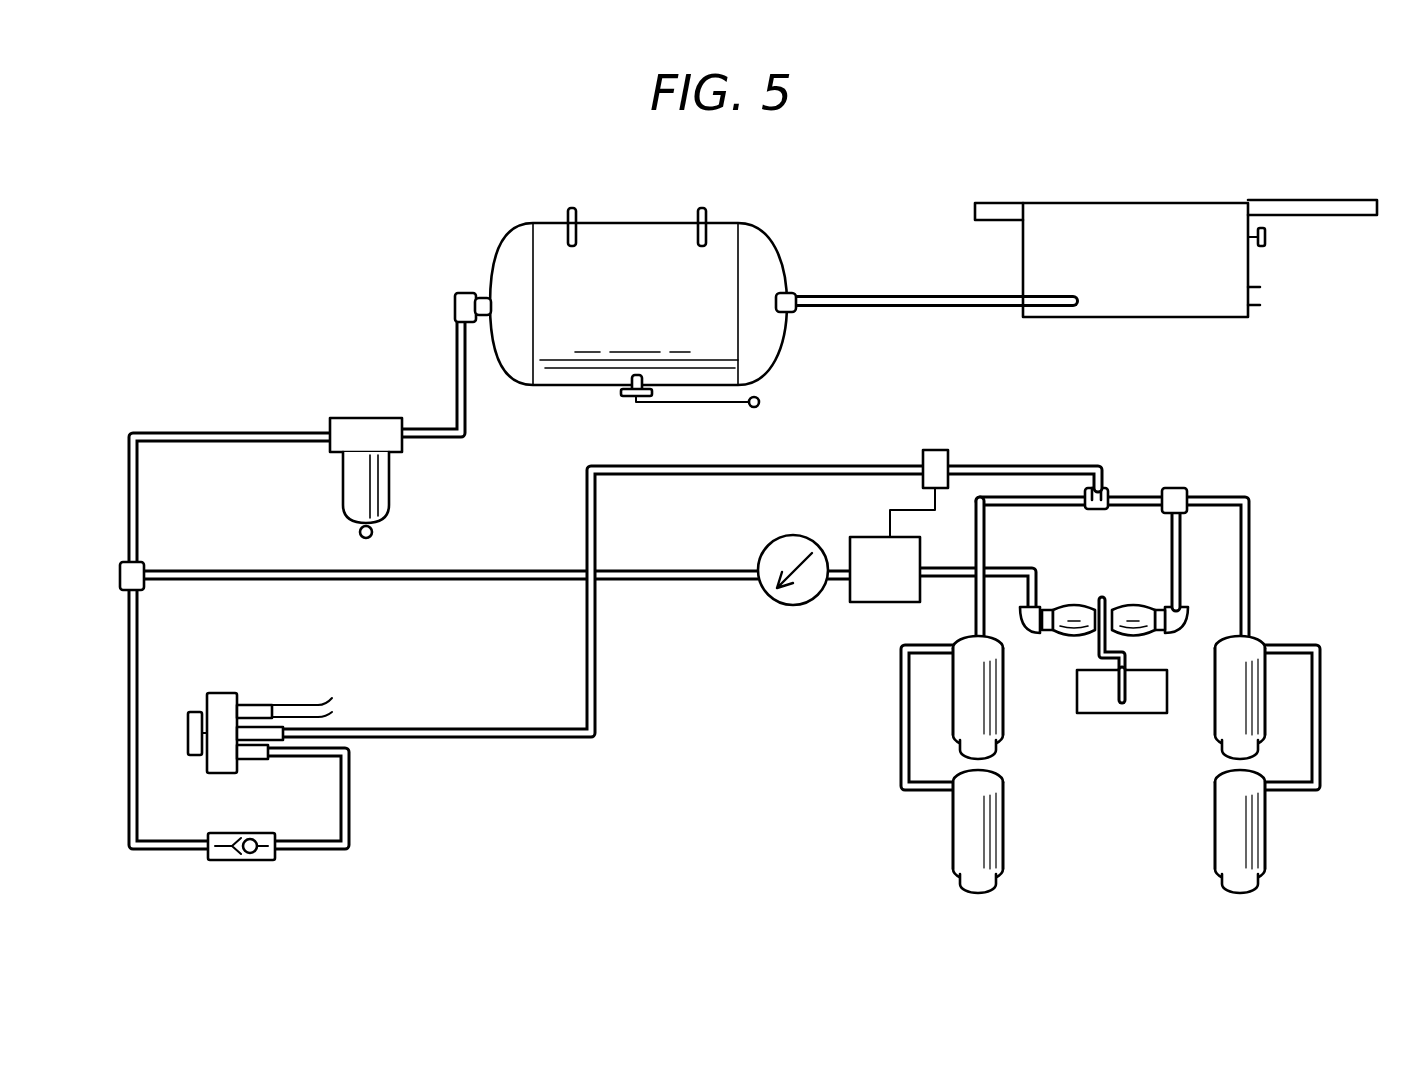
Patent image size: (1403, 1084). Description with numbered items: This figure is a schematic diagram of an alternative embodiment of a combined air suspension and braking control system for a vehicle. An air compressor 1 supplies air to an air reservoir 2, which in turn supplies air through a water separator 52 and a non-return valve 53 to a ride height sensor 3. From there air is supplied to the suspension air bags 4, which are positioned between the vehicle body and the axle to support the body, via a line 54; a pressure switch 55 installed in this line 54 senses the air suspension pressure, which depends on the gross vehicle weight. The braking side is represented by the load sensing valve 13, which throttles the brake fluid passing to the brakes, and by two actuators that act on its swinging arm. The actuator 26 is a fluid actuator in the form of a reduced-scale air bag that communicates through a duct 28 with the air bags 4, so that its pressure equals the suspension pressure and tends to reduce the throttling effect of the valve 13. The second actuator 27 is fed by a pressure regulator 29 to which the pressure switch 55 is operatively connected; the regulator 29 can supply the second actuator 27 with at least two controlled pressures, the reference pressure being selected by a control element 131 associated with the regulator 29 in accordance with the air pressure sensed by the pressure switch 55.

The air compressor 1 is at (1117, 248).
The air reservoir 2 is at (618, 272).
The ride height sensor 3 is at (218, 715).
The air bags 4 is at (1008, 860).
The load sensing valve 13 is at (1112, 715).
The actuator 26 is at (1125, 613).
The second actuator 27 is at (1063, 613).
The duct 28 is at (1180, 568).
The pressure regulator 29 is at (785, 606).
The water separator 52 is at (370, 478).
The non-return valve 53 is at (275, 862).
The line 54 is at (597, 660).
The pressure switch 55 is at (935, 458).
The control element 131 is at (897, 604).